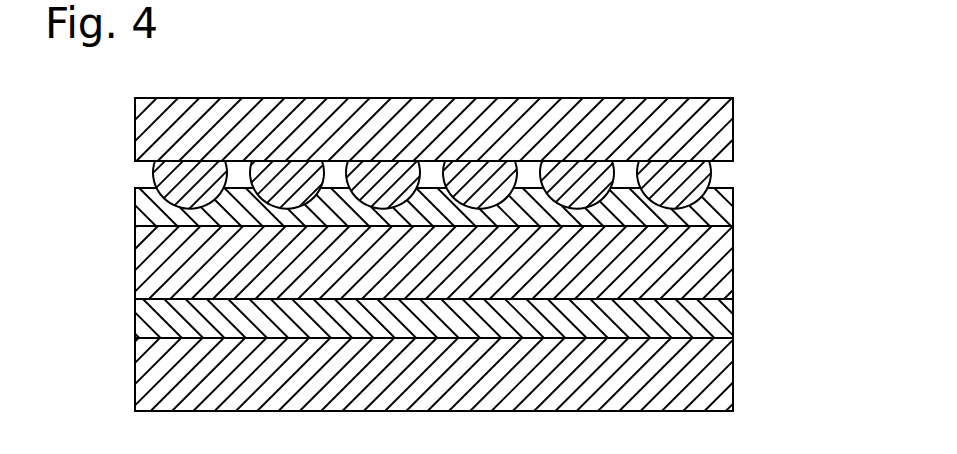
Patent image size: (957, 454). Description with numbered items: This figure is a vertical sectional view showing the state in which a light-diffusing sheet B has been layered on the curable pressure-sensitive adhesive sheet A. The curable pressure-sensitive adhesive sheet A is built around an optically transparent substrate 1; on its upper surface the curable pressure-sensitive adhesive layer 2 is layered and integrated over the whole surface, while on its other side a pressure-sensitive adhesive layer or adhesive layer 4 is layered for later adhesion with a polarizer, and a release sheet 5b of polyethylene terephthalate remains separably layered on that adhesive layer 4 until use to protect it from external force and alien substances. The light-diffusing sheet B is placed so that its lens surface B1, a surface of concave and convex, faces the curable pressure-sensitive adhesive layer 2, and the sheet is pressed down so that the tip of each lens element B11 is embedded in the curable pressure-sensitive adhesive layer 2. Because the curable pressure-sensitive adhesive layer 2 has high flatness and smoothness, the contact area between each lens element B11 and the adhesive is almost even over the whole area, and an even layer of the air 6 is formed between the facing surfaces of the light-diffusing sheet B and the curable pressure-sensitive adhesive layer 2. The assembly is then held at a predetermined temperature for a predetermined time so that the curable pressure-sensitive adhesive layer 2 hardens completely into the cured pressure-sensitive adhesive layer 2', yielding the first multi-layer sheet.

The curable pressure-sensitive adhesive sheet A is at (131, 255).
The light-diffusing sheet B is at (737, 116).
The lens surface B1 is at (144, 163).
The lens element B11 is at (167, 192).
The layer of the air 6 is at (432, 173).
The curable pressure-sensitive adhesive layer 2 is at (487, 207).
The cured pressure-sensitive adhesive layer 2' is at (487, 207).
The optically transparent substrate 1 is at (725, 262).
The pressure-sensitive adhesive layer or adhesive layer 4 is at (725, 320).
The release sheet 5b is at (725, 372).